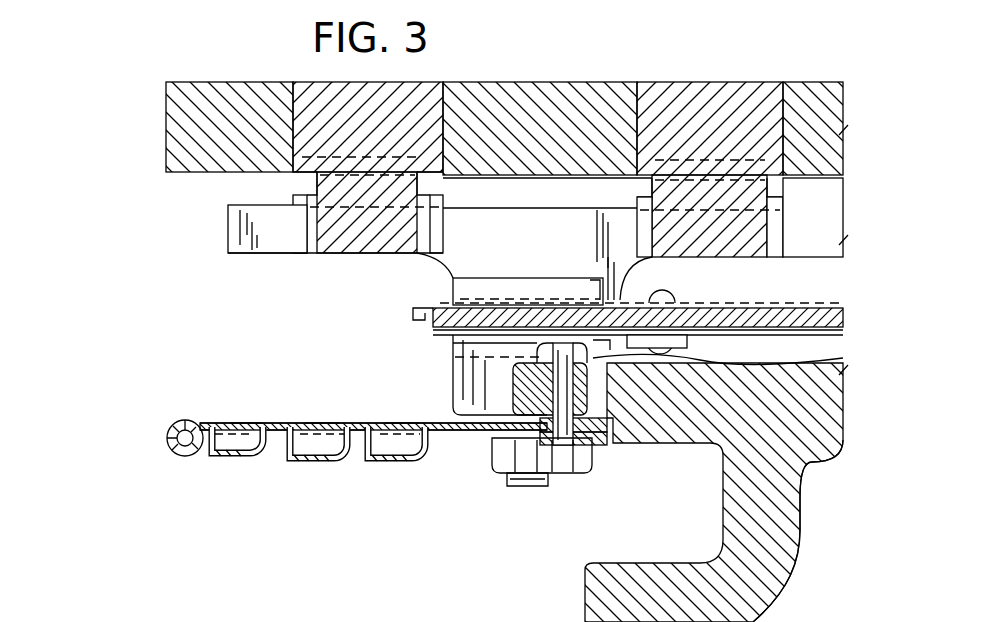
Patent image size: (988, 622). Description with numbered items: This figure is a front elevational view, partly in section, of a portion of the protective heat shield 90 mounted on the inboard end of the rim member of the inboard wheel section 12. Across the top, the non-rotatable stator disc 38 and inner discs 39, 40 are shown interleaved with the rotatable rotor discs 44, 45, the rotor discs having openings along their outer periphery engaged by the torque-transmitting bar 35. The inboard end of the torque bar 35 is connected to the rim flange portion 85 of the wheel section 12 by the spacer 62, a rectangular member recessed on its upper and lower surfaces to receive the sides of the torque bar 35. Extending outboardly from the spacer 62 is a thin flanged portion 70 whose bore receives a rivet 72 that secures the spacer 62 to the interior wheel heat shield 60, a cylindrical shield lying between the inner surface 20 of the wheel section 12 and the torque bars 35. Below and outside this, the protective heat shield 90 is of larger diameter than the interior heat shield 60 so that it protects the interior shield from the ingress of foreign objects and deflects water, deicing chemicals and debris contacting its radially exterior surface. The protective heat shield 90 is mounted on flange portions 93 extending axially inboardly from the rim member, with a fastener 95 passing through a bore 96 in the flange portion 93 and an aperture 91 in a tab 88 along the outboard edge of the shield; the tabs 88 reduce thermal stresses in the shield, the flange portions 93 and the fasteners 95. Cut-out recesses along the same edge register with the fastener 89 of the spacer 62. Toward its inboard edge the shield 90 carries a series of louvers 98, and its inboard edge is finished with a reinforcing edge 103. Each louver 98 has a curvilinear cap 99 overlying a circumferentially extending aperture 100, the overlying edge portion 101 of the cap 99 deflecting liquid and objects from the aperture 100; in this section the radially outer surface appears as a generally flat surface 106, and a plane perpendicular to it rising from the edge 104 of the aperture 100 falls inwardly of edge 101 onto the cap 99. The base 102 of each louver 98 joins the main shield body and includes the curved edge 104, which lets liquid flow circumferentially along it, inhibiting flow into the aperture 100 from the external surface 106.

The inboard wheel section 12 is at (827, 455).
The inner surface of wheel section 20 is at (716, 485).
The torque-transmitting bar 35 is at (228, 232).
The stator disc 38 is at (203, 90).
The inner disc 39 is at (548, 103).
The inner disc 40 is at (813, 97).
The rotor disc 44 is at (323, 103).
The rotor disc 45 is at (707, 103).
The interior wheel heat shield 60 is at (748, 300).
The spacer 62 is at (450, 292).
The flanged portion 70 is at (690, 341).
The rivet 72 is at (667, 290).
The rim flange portion 85 is at (460, 367).
The tab 88 is at (610, 457).
The fastener of spacer 89 is at (523, 488).
The protective heat shield 90 is at (283, 442).
The aperture 91 is at (570, 475).
The flange portion 93 is at (552, 385).
The fastener 95 is at (606, 434).
The bore 96 is at (590, 372).
The louver 98 is at (283, 442).
The cap 99 is at (230, 462).
The aperture 100 is at (240, 423).
The overlying edge portion 101 is at (203, 458).
The base of louver 102 is at (217, 420).
The reinforcing edge 103 is at (172, 428).
The edge 104 is at (213, 422).
The flat surface 106 is at (435, 440).